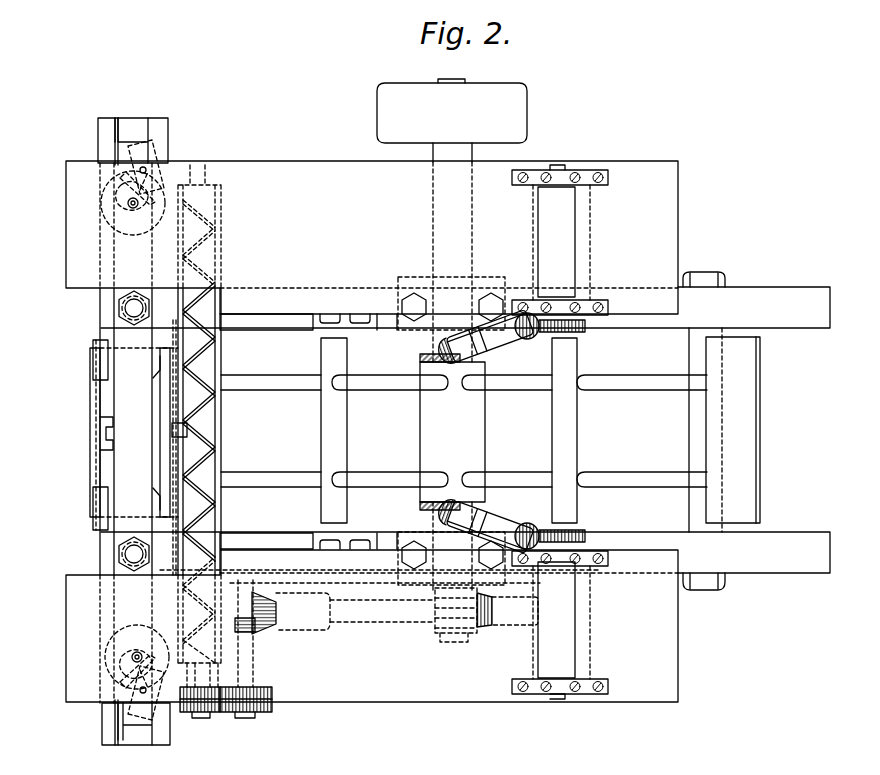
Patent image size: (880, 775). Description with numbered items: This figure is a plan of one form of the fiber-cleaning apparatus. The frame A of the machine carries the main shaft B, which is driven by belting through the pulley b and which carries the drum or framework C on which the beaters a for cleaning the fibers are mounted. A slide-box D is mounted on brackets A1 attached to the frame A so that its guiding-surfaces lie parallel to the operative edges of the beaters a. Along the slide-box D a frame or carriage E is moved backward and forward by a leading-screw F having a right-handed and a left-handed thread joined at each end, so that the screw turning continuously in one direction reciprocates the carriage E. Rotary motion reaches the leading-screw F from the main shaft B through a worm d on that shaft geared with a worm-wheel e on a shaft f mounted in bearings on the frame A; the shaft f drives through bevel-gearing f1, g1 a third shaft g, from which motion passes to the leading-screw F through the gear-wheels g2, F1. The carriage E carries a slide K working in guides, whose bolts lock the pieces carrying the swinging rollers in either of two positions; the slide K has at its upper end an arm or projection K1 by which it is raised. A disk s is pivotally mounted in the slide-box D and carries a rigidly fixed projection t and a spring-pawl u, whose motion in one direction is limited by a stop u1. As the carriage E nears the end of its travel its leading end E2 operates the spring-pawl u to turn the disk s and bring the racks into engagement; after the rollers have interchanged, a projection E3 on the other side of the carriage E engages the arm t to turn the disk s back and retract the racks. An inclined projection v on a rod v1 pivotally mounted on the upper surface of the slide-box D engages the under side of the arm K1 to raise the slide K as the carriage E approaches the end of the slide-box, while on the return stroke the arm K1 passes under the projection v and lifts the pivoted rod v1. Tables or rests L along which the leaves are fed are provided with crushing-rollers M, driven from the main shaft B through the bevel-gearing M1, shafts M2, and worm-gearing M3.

The frame A is at (465, 431).
The brackets A1 is at (118, 308).
The main shaft B is at (472, 150).
The drum or framework C is at (183, 422).
The slide-box D is at (158, 120).
The carriage E is at (139, 447).
The leading end of the carriage E2 is at (104, 341).
The projection on the carriage E3 is at (153, 374).
The leading-screw F is at (218, 350).
The gear-wheel F1 is at (202, 704).
The slide K is at (92, 410).
The arm or projection of the slide K1 is at (106, 433).
The tables or rests L is at (304, 172).
The crushing-rollers M is at (560, 432).
The bevel-gearing M1 is at (420, 356).
The shafts M2 is at (500, 340).
The worm-gearing M3 is at (536, 338).
The beaters a is at (540, 430).
The pulley b is at (452, 120).
The worm d is at (436, 628).
The worm-wheel e is at (484, 628).
The shaft f is at (355, 623).
The bevel-gear f1 is at (262, 620).
The third shaft g is at (246, 716).
The bevel-gear g1 is at (250, 635).
The gear-wheel g2 is at (272, 700).
The disk s is at (108, 206).
The projection or arm t is at (150, 160).
The spring-pawl u is at (122, 176).
The stop u1 is at (148, 178).
The inclined projection v is at (112, 275).
The rod v1 is at (116, 165).